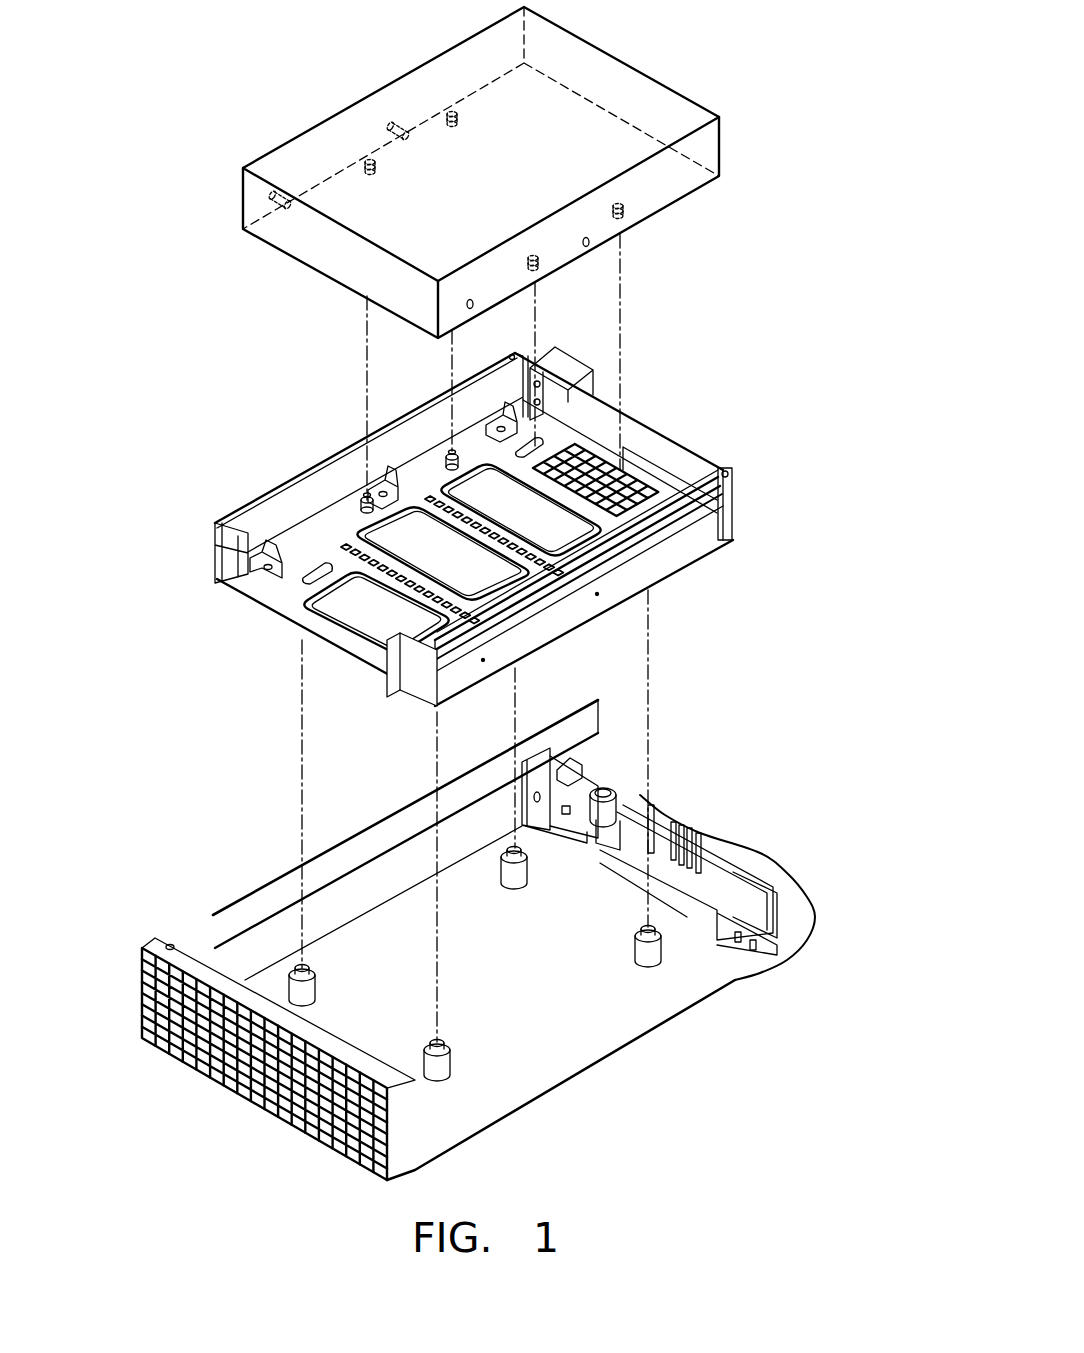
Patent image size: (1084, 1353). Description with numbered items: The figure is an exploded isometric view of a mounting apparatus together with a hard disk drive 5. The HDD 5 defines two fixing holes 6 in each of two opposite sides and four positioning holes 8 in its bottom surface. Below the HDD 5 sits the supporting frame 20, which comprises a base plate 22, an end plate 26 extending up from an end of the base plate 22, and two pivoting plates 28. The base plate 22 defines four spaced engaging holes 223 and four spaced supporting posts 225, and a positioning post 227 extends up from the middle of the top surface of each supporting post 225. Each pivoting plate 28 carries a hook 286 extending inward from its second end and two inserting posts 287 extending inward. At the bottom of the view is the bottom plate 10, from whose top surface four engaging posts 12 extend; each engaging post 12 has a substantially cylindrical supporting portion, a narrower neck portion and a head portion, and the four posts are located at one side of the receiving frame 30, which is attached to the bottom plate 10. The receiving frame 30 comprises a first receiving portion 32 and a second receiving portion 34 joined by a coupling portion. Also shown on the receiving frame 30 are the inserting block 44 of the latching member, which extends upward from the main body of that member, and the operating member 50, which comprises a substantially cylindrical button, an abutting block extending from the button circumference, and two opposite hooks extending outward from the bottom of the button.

The hard disk drive 5 is at (495, 113).
The fixing holes 6 is at (589, 243).
The positioning holes 8 is at (361, 173).
The bottom plate 10 is at (502, 919).
The engaging posts 12 is at (651, 957).
The supporting frame 20 is at (479, 541).
The base plate 22 is at (292, 607).
The end plate 26 is at (638, 442).
The pivoting plates 28 is at (689, 552).
The receiving frame 30 is at (753, 900).
The first receiving portion 32 is at (553, 783).
The second receiving portion 34 is at (586, 793).
The inserting block 44 is at (570, 763).
The operating member 50 is at (599, 810).
The engaging holes 223 is at (300, 572).
The supporting posts 225 is at (275, 533).
The positioning post 227 is at (366, 498).
The hook 286 is at (398, 647).
The inserting posts 287 is at (277, 538).